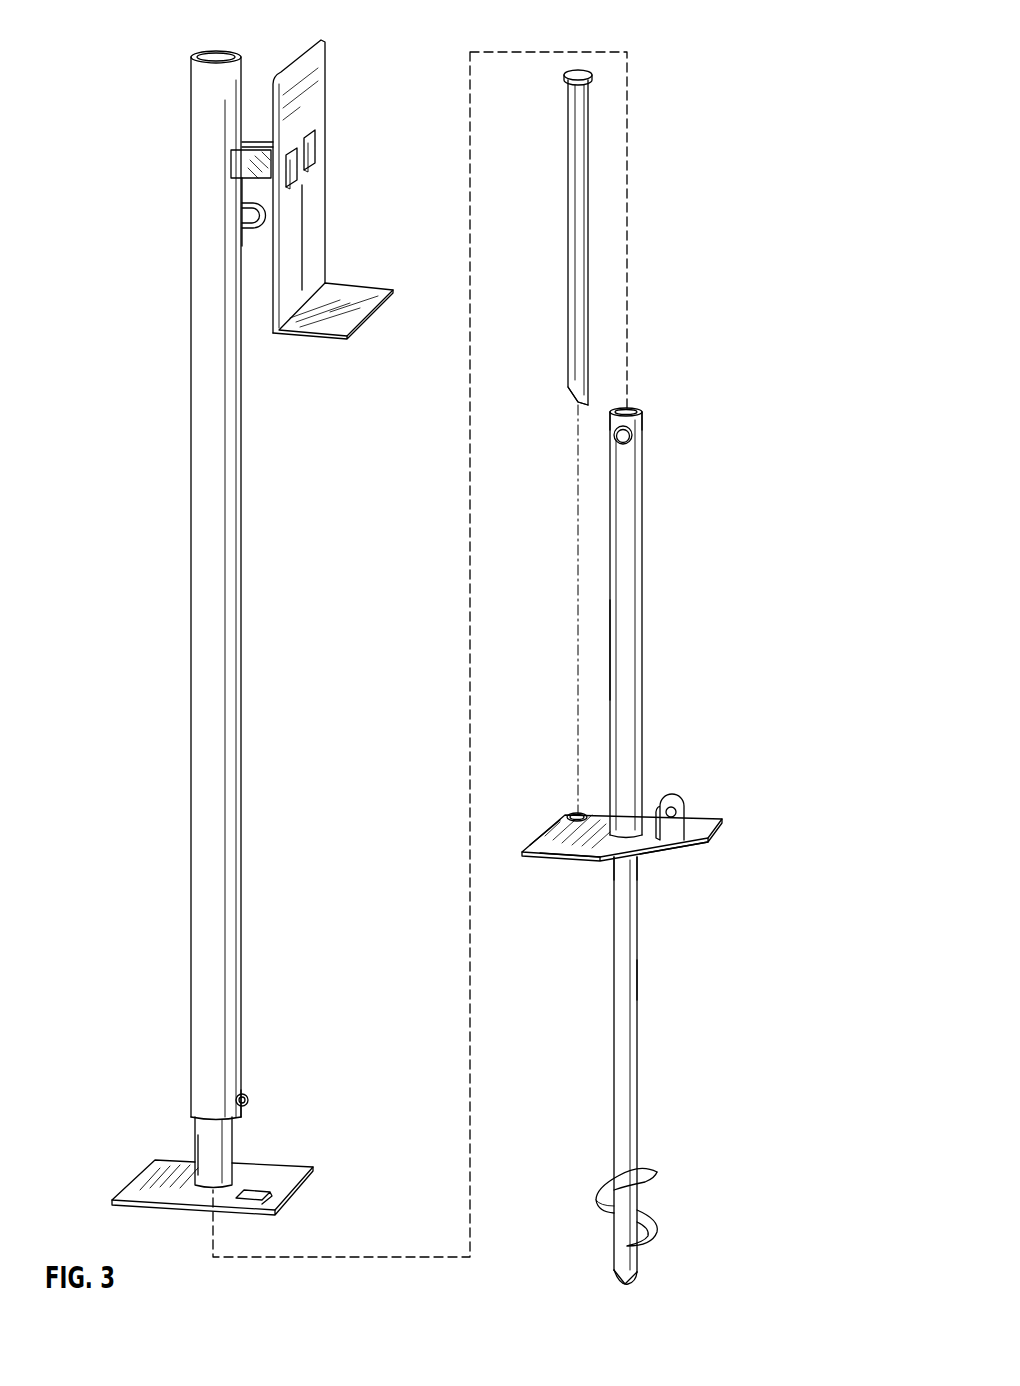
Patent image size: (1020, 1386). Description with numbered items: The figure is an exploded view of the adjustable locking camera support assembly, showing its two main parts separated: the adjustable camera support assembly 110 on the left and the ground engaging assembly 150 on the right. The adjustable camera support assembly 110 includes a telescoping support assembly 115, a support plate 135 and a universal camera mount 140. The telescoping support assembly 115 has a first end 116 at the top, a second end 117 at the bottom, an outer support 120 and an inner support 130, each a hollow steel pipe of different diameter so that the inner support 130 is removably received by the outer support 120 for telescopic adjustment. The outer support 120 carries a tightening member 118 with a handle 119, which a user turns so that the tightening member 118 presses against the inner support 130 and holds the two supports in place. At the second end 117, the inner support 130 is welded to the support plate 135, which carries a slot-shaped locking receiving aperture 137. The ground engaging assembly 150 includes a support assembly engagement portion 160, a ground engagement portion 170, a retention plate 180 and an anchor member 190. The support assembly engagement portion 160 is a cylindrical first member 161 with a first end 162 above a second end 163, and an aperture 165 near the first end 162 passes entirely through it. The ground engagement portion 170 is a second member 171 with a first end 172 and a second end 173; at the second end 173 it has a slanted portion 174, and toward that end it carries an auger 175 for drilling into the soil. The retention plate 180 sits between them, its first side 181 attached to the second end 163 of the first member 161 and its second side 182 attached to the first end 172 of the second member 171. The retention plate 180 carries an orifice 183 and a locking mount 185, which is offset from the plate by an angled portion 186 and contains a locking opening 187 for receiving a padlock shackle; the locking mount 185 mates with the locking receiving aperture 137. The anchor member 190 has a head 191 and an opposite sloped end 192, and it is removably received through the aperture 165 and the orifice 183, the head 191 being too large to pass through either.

The adjustable camera support assembly 110 is at (150, 542).
The telescoping support assembly 115 is at (150, 933).
The first end 116 is at (214, 50).
The second end 117 is at (200, 1148).
The tightening member 118 is at (249, 1100).
The handle 119 is at (246, 1094).
The outer support 120 is at (225, 971).
The inner support 130 is at (226, 1140).
The support plate 135 is at (140, 1186).
The locking receiving aperture 137 is at (271, 1200).
The universal camera mount 140 is at (302, 78).
The ground engaging assembly 150 is at (745, 570).
The support assembly engagement portion 160 is at (642, 563).
The first member 161 is at (642, 626).
The first end 162 is at (632, 412).
The second end 163 is at (632, 826).
The aperture 165 is at (637, 443).
The ground engagement portion 170 is at (637, 1058).
The second member 171 is at (637, 980).
The first end 172 is at (640, 864).
The second end 173 is at (638, 1282).
The slanted portion 174 is at (618, 1284).
The auger 175 is at (657, 1173).
The retention plate 180 is at (706, 823).
The first side 181 is at (546, 836).
The second side 182 is at (565, 854).
The orifice 183 is at (572, 812).
The locking mount 185 is at (673, 796).
The angled portion 186 is at (668, 849).
The locking opening 187 is at (680, 812).
The anchor member 190 is at (568, 258).
The head 191 is at (572, 72).
The sloped end 192 is at (575, 398).